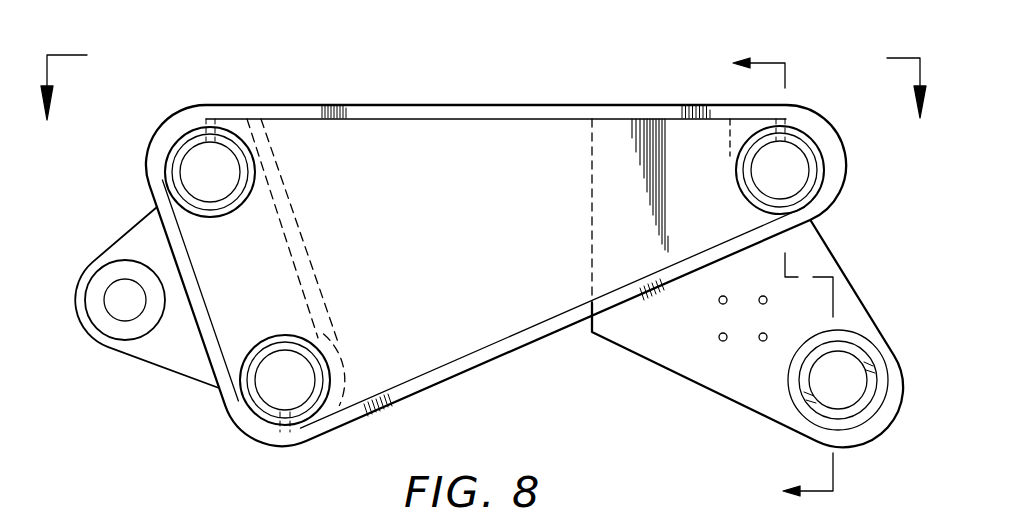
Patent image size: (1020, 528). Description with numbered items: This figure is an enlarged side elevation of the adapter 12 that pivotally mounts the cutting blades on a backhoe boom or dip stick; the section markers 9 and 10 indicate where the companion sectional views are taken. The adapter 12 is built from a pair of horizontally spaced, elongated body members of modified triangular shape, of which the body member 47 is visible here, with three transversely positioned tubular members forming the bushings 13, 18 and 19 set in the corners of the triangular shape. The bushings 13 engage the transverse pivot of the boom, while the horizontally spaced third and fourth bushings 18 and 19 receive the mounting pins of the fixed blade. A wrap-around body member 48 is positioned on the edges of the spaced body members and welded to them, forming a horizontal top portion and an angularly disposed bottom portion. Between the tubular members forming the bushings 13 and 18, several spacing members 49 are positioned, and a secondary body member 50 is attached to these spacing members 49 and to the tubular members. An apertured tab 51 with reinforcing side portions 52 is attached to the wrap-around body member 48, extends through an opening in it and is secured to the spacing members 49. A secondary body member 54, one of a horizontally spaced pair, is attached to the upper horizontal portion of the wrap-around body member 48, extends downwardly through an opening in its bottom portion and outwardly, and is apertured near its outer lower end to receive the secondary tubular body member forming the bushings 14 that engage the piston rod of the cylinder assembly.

The section line 9- 9 is at (483, 103).
The section line 10- 10 is at (764, 277).
The adapter 12 is at (453, 96).
The bushings 13 is at (310, 405).
The secondary bushings 14 is at (825, 412).
The third bushing 18 is at (170, 168).
The fourth bushing 19 is at (810, 150).
The body member 47 is at (464, 274).
The wrap-around body member 48 is at (548, 112).
The spacing members 49 is at (300, 237).
The secondary body member 50 is at (318, 283).
The apertured tab 51 is at (167, 363).
The reinforcing side portions 52 is at (125, 340).
The secondary body member 54 is at (592, 227).